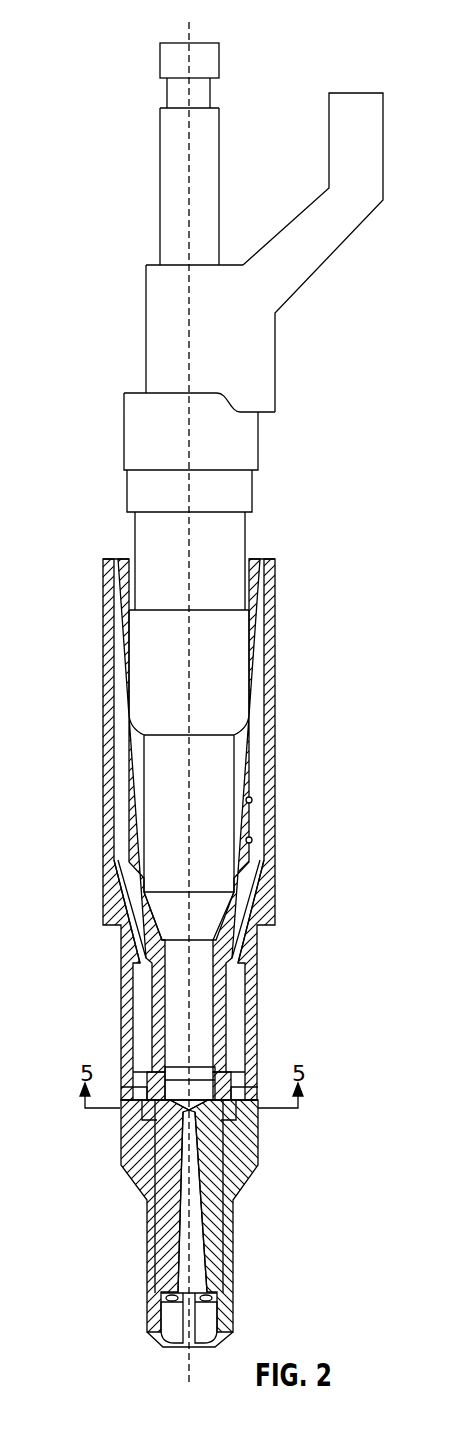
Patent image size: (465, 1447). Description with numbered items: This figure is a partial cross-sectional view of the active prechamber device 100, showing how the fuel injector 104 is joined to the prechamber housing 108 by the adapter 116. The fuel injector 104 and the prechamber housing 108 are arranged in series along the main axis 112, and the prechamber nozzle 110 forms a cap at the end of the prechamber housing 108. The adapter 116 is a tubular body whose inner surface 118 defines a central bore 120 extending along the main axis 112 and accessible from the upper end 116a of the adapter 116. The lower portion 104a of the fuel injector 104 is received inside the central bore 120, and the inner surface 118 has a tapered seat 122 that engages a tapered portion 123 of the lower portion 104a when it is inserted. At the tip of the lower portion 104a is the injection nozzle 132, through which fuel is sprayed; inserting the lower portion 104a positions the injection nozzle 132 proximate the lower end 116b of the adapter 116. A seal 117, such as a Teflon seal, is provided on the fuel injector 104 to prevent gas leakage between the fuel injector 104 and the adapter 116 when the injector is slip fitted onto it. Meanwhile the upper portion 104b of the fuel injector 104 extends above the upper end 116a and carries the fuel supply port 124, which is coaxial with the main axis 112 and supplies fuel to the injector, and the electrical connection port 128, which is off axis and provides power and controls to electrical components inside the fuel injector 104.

The active prechamber device 100 is at (126, 179).
The fuel injector 104 is at (146, 356).
The lower portion 104a is at (242, 660).
The upper portion 104b is at (258, 440).
The prechamber housing 108 is at (233, 1232).
The prechamber nozzle 110 is at (188, 1340).
The main axis 112 is at (190, 540).
The adapter 116 is at (275, 725).
The upper end 116a is at (108, 558).
The lower end 116b is at (121, 1090).
The seal 117 is at (205, 1062).
The inner surface 118 is at (251, 799).
The central bore 120 is at (251, 839).
The tapered seat 122 is at (227, 903).
The tapered portion 123 is at (160, 903).
The fuel supply port 124 is at (178, 43).
The electrical connection port 128 is at (362, 93).
The injection nozzle 132 is at (190, 1108).